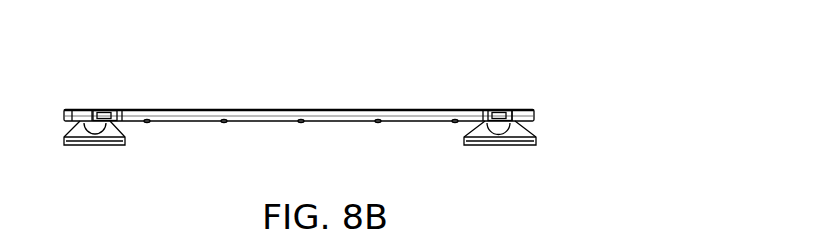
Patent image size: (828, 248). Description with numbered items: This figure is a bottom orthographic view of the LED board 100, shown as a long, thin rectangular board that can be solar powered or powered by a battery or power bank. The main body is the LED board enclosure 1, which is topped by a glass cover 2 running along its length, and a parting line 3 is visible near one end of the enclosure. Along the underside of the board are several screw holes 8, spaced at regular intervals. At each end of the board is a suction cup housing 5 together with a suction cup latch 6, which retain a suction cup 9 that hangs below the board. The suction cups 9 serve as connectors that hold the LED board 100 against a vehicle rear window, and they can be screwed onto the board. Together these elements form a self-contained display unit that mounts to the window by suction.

The LED board 100 is at (568, 60).
The LED board enclosure 1 is at (175, 118).
The glass cover 2 is at (297, 110).
The screw hole 8 is at (224, 119).
The suction cup 9 is at (74, 109).
The suction cup housing 5 is at (121, 112).
The parting line 3 is at (483, 108).
The suction cup latch 6 is at (507, 108).